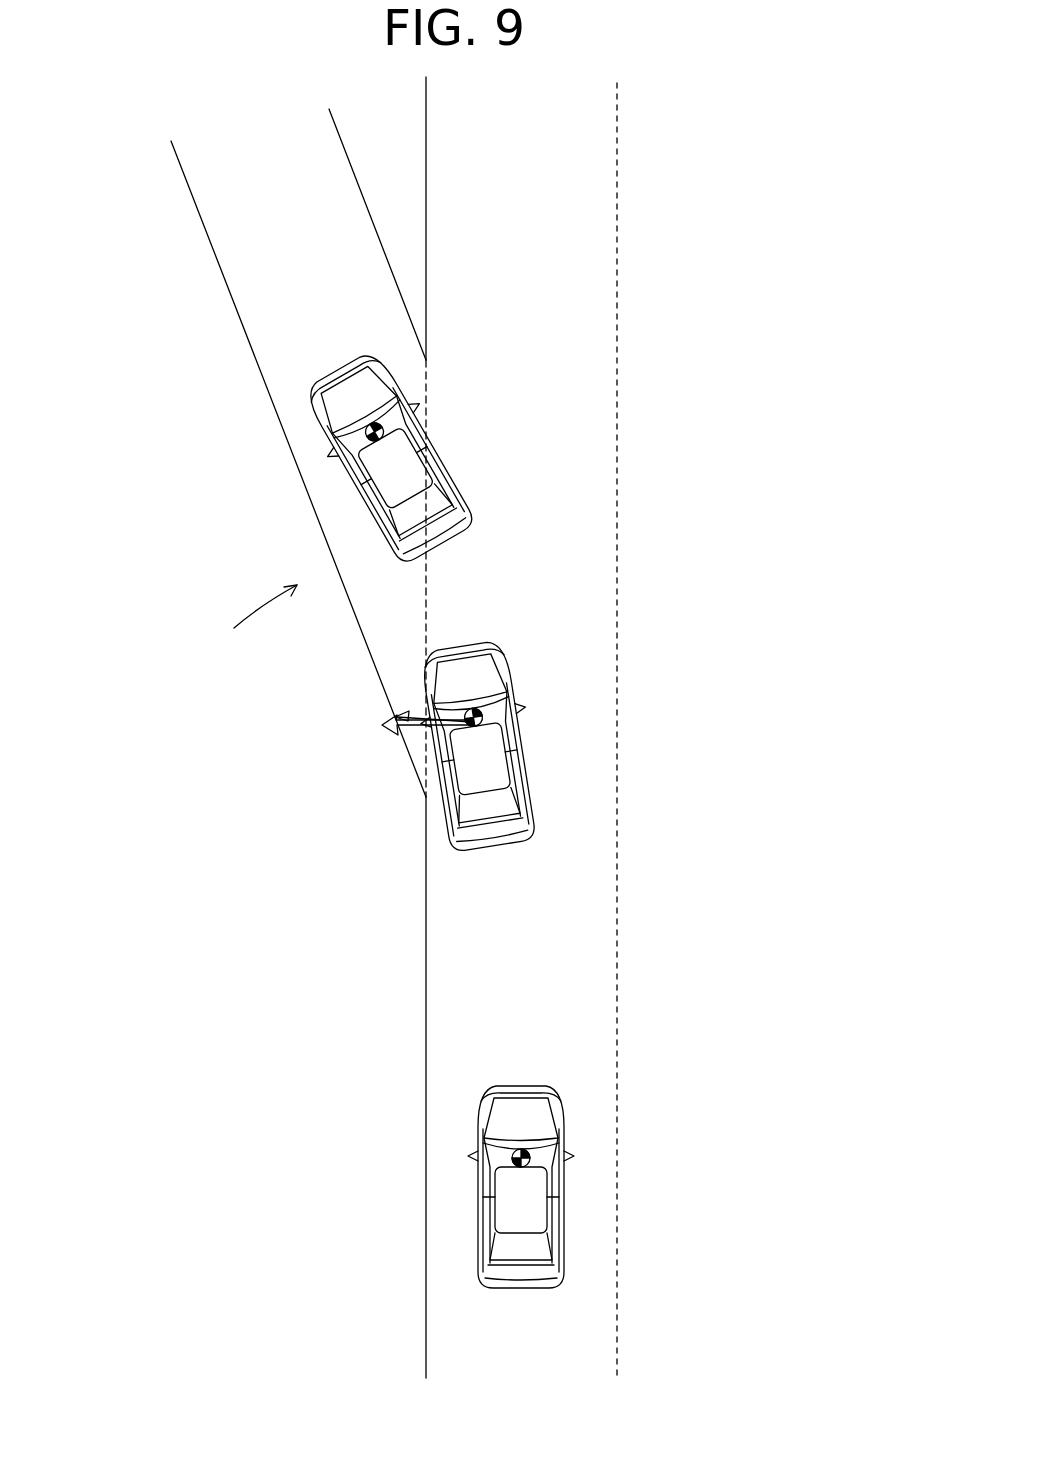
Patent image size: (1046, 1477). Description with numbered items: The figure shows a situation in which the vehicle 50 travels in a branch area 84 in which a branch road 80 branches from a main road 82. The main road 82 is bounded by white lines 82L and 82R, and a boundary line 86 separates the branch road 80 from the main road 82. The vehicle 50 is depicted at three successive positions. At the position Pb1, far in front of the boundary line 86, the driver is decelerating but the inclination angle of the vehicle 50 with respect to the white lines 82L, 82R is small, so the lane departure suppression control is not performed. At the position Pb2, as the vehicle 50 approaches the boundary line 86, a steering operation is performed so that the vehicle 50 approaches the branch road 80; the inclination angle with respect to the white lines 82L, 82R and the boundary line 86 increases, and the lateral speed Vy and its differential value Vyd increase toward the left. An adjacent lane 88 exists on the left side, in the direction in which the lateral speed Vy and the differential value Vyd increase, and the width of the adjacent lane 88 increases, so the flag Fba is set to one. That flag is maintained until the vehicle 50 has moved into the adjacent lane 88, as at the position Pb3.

The vehicle 50 is at (478, 1195).
The branch road 80 is at (265, 145).
The main road 82 is at (685, 212).
The white line 82L is at (427, 969).
The white line 82R is at (617, 995).
The branch area 84 is at (248, 620).
The boundary line 86 is at (428, 604).
The adjacent lane 88 is at (320, 500).
The position Pb1 is at (521, 1212).
The position Pb2 is at (478, 768).
The position Pb3 is at (389, 445).
The lateral speed Vy is at (407, 740).
The differential value Vyd is at (416, 712).